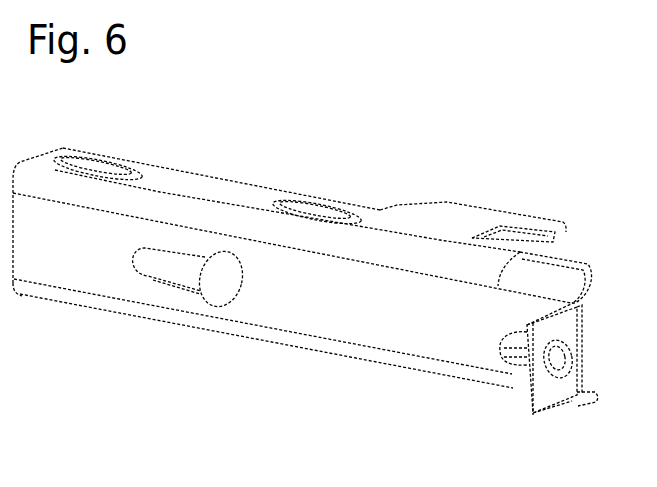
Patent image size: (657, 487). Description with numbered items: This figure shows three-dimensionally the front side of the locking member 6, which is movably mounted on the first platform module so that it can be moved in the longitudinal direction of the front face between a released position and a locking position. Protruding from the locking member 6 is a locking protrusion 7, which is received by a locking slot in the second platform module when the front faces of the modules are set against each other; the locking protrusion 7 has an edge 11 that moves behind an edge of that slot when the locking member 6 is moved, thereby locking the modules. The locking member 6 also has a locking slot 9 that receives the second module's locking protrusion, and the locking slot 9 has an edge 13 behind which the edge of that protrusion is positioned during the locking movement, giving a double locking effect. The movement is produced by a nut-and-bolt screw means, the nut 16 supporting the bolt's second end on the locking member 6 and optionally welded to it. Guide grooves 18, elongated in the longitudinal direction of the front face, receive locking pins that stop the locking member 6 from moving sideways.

The locking member 6 is at (194, 384).
The locking protrusion 7 is at (489, 214).
The locking slot 9 is at (180, 267).
The edge 11 is at (528, 237).
The edge 13 is at (153, 288).
The nut 16 is at (516, 365).
The guide grooves 18 is at (119, 174).